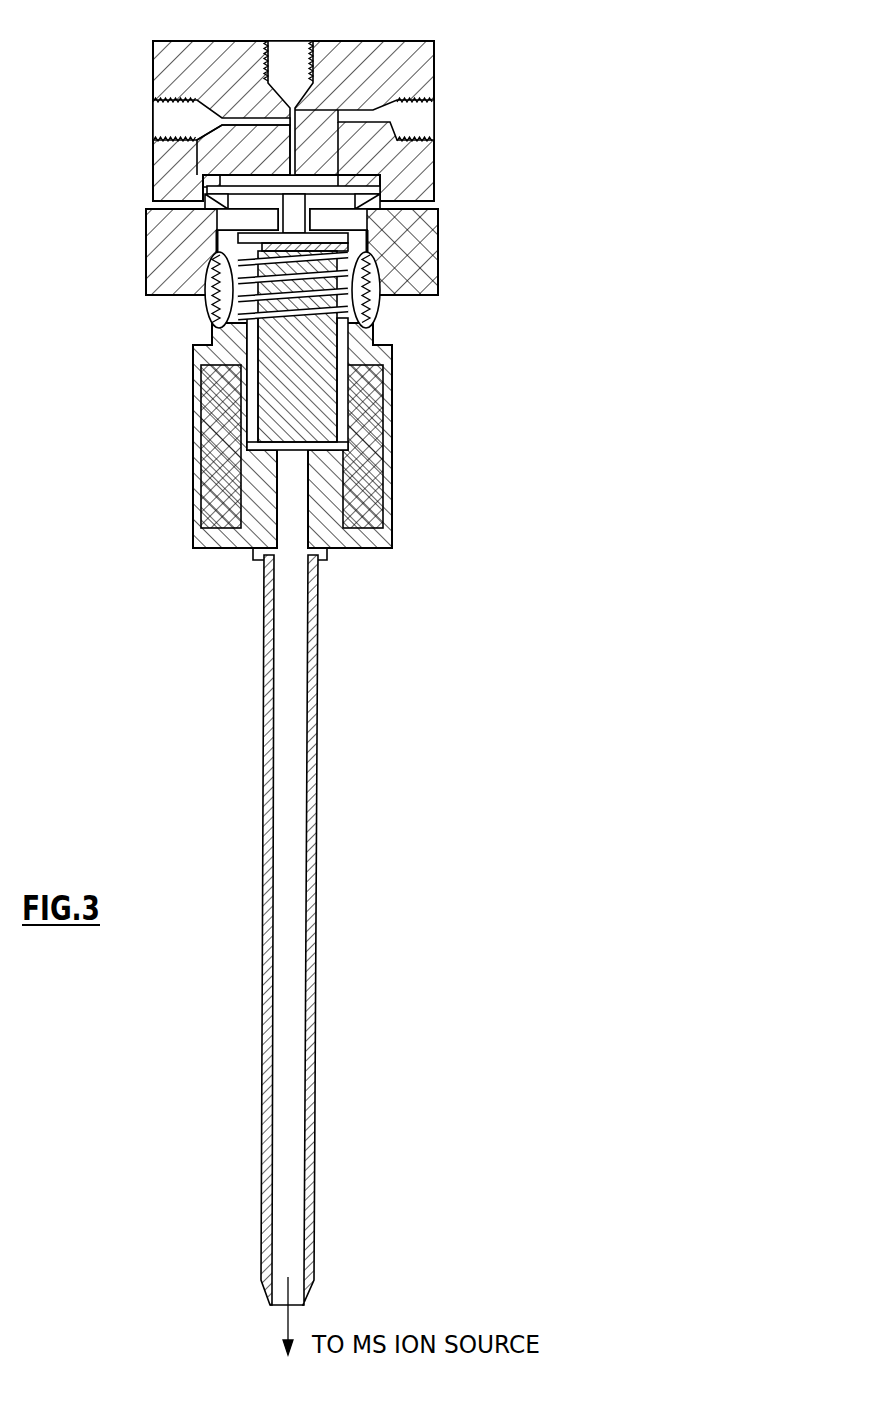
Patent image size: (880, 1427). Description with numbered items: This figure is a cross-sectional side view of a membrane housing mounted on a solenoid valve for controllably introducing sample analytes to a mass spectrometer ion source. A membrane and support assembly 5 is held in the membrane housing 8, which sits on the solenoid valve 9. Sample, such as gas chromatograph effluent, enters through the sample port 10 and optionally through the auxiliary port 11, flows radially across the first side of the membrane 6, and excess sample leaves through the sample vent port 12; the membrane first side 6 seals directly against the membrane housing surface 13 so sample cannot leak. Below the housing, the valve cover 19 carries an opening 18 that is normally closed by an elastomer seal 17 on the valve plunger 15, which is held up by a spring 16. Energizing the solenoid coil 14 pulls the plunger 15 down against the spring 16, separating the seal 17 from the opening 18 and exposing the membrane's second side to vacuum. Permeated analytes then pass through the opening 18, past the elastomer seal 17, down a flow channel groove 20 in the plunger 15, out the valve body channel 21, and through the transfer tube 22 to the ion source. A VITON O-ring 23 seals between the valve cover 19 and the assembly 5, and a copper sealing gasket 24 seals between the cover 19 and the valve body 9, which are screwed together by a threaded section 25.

The membrane and support assembly 5 is at (382, 191).
The first side of the membrane 6 is at (258, 172).
The membrane housing 8 is at (436, 62).
The solenoid valve 9 is at (393, 407).
The sample port 10 is at (300, 50).
The auxiliary port 11 is at (162, 121).
The sample vent port 12 is at (425, 122).
The membrane housing surface 13 is at (212, 185).
The solenoid coil 14 is at (215, 503).
The valve plunger 15 is at (295, 378).
The spring 16 is at (355, 318).
The elastomer seal 17 is at (200, 250).
The opening 18 is at (420, 262).
The valve cover 19 is at (440, 278).
The flow channel groove 20 is at (212, 352).
The valve body channel 21 is at (296, 540).
The transfer tube 22 is at (312, 998).
The VITON O-ring 23 is at (215, 232).
The copper sealing gasket 24 is at (210, 280).
The threaded section 25 is at (206, 315).